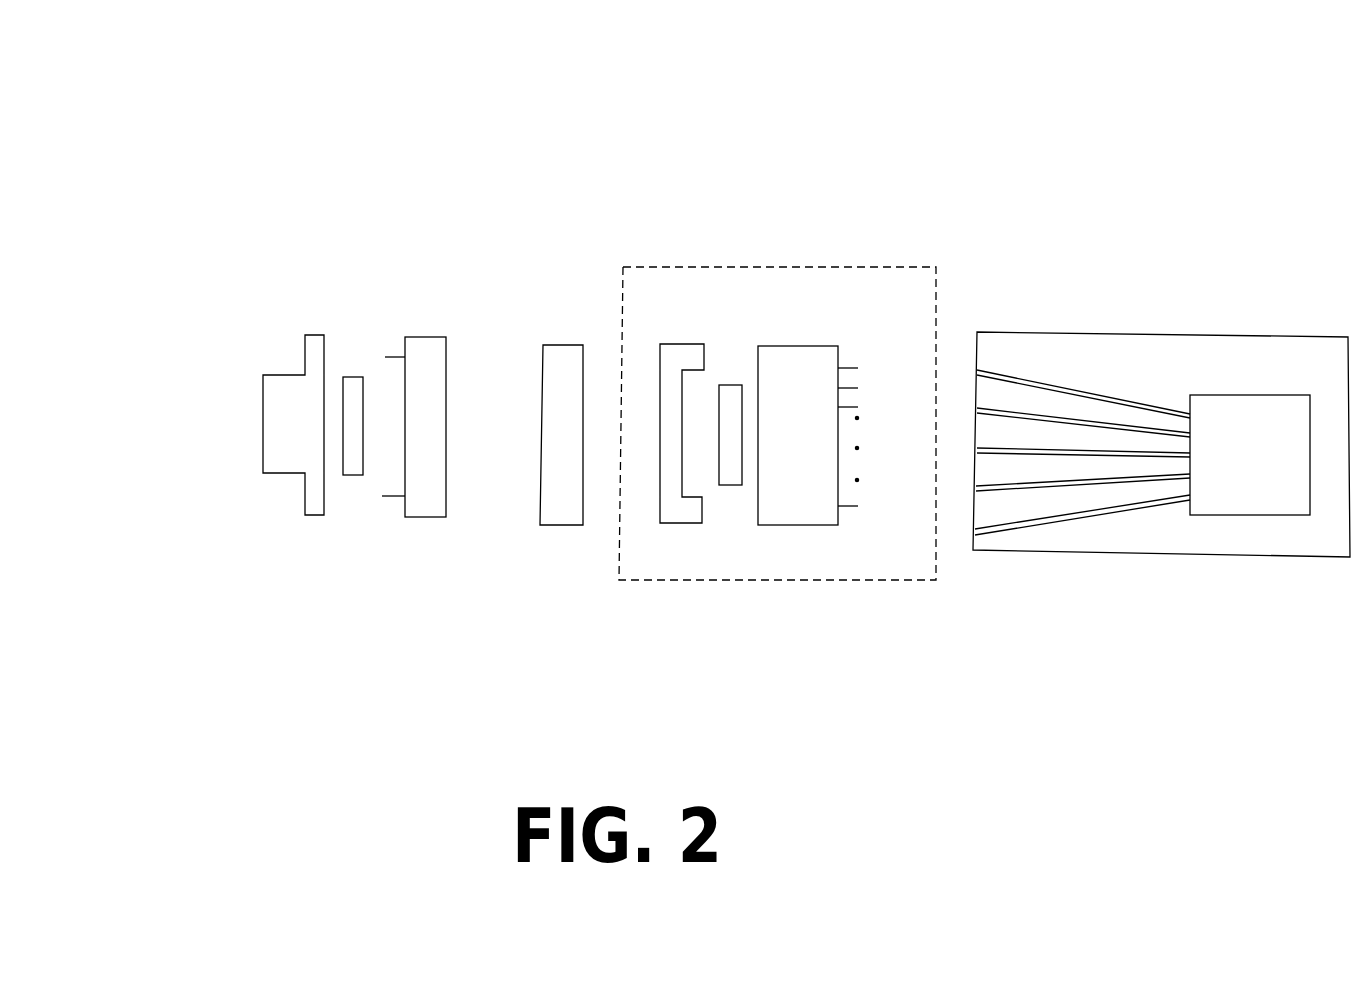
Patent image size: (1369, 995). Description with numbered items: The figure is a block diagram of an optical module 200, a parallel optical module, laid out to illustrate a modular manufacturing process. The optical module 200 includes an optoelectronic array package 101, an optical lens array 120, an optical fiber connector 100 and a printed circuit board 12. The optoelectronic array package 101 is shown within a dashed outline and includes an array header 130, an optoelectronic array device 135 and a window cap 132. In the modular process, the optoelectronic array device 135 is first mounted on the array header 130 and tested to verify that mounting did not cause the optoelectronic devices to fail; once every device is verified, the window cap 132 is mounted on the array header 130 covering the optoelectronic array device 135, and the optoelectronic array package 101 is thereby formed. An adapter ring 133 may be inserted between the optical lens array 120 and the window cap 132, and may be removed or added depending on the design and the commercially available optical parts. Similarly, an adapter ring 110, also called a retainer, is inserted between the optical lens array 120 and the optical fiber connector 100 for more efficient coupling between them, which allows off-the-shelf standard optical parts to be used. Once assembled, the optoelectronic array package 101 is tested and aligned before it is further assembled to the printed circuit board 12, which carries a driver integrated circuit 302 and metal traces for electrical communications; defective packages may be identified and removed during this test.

The optical module 200 is at (112, 58).
The optical fiber connector 100 is at (293, 425).
The adapter ring 110 is at (353, 355).
The optical lens array 120 is at (412, 535).
The adapter ring 133 is at (564, 527).
The optoelectronic array package 101 is at (777, 423).
The window cap 132 is at (672, 330).
The optoelectronic array device 135 is at (730, 510).
The array header 130 is at (808, 435).
The printed circuit board 12 is at (1161, 444).
The driver integrated circuit 302 is at (1250, 455).